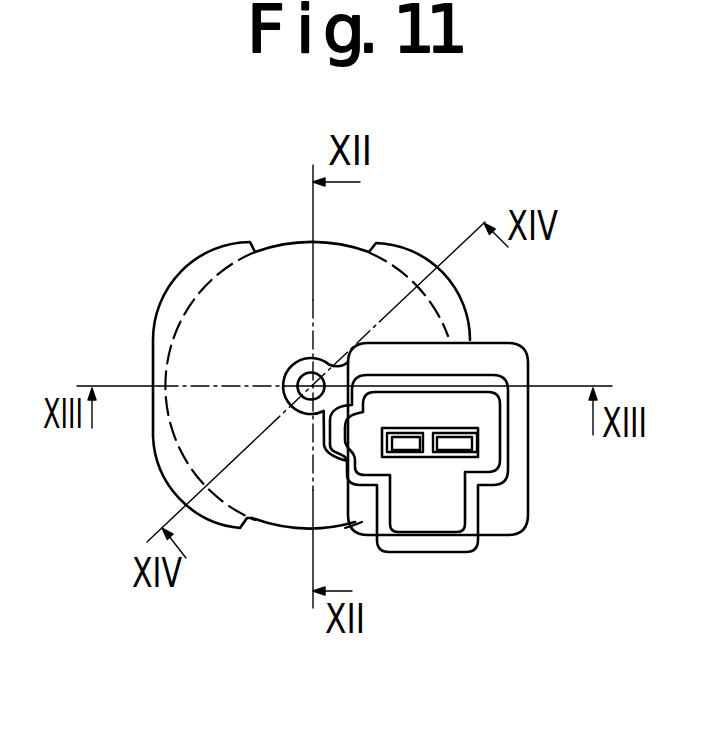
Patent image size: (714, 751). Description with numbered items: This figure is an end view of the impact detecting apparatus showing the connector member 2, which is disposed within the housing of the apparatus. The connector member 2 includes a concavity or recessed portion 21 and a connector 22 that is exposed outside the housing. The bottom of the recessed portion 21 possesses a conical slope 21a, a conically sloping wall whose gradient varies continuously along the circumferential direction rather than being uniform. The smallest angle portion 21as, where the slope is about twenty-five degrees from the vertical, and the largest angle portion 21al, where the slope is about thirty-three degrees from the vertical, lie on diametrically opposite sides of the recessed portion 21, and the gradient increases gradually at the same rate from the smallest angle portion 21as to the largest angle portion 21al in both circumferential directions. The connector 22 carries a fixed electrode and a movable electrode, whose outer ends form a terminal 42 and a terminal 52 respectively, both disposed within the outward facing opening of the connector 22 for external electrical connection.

The connector member 2 is at (472, 314).
The recessed portion 21 is at (248, 295).
The conical slope 21a is at (178, 430).
The smallest angle portion 21as is at (322, 240).
The largest angle portion 21al is at (296, 538).
The connector 22 is at (507, 515).
The terminal 42 is at (408, 450).
The terminal 52 is at (450, 450).